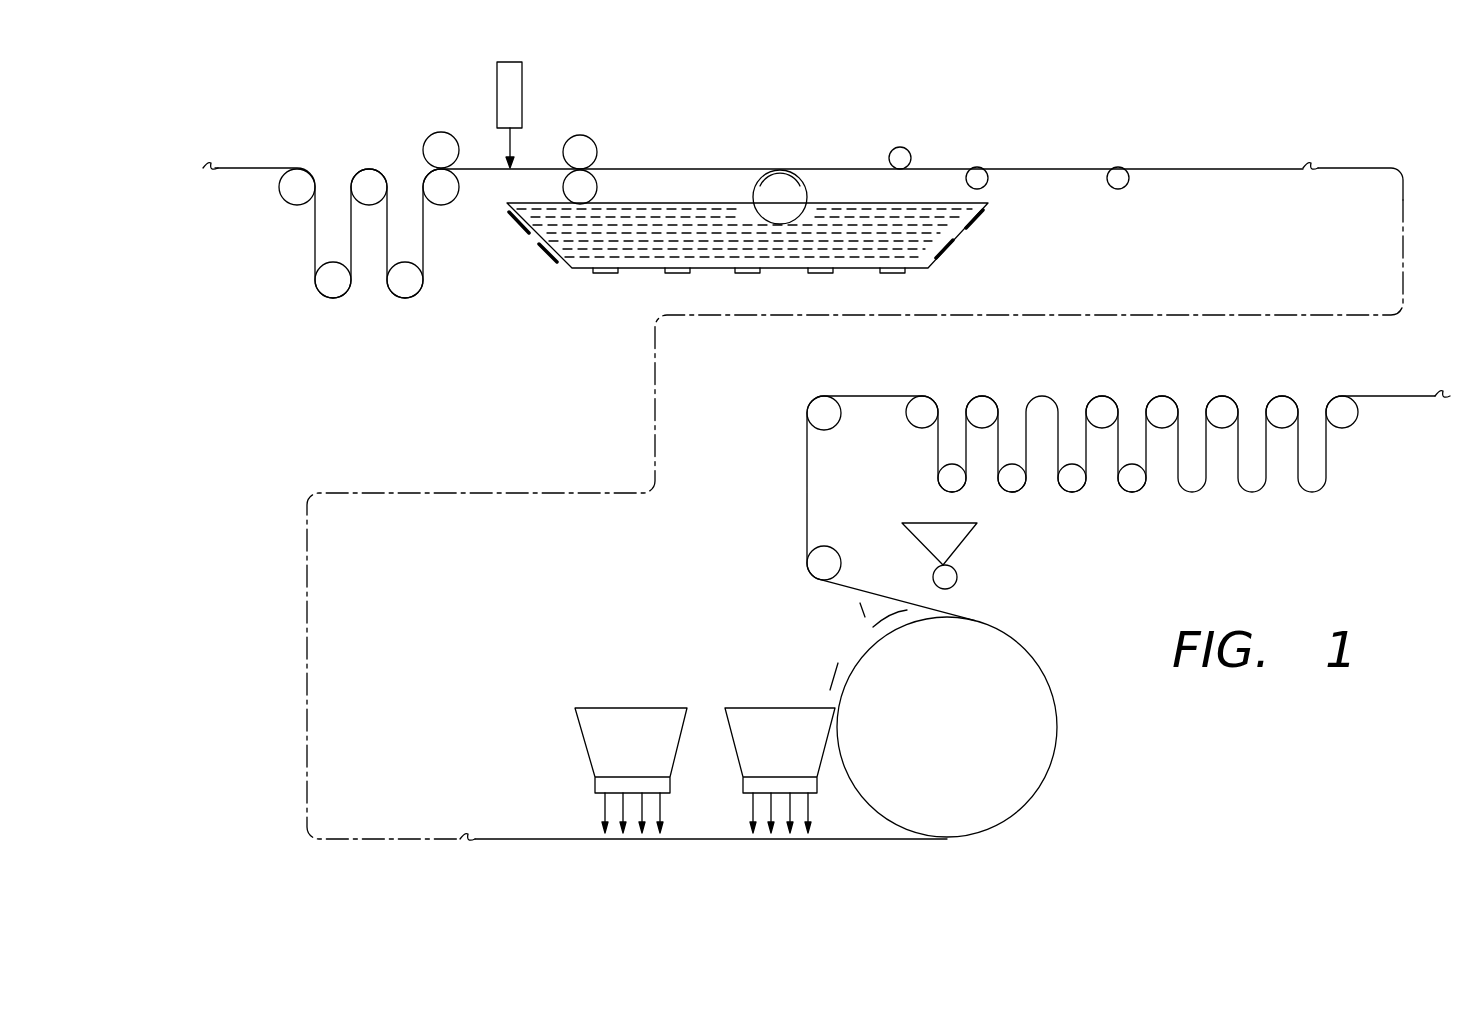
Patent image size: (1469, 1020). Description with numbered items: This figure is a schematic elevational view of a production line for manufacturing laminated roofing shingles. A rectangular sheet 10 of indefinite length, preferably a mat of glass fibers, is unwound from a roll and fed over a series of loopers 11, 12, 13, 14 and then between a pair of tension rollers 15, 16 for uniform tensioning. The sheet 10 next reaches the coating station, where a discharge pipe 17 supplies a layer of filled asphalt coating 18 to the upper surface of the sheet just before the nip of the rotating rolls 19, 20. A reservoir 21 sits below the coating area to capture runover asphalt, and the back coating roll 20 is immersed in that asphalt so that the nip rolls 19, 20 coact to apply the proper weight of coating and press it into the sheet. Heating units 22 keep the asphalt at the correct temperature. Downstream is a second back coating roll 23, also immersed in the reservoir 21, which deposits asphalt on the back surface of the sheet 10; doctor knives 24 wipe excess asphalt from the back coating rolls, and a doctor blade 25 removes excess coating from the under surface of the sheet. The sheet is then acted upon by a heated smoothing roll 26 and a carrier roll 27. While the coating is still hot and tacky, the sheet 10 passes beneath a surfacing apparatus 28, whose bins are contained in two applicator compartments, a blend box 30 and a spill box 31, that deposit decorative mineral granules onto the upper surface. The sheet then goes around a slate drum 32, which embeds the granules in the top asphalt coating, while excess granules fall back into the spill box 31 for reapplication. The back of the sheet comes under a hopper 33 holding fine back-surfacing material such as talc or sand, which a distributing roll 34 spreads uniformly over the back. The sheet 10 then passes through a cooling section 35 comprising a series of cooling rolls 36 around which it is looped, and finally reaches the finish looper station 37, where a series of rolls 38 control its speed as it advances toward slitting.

The sheet 10 is at (243, 167).
The looper 11 is at (281, 193).
The looper 12 is at (316, 276).
The looper 13 is at (356, 178).
The looper 14 is at (393, 290).
The tension roller 15 is at (428, 139).
The tension roller 16 is at (459, 188).
The discharge pipe 17 is at (497, 95).
The asphalt coating 18 is at (512, 137).
The nip roll 19 is at (592, 141).
The back coating roll 20 is at (597, 192).
The reservoir 21 is at (505, 213).
The heating units 22 is at (512, 208).
The back coating roll 23 is at (782, 170).
The doctor knife 24 is at (758, 176).
The doctor blade 25 is at (989, 179).
The smoothing roll 26 is at (911, 156).
The carrier roll 27 is at (1130, 180).
The surfacing apparatus 28 is at (830, 672).
The blend box 30 is at (590, 708).
The spill box 31 is at (770, 708).
The slate drum 32 is at (1022, 760).
The hopper 33 is at (957, 565).
The distributing roll 34 is at (957, 580).
The cooling section 35 is at (935, 377).
The cooling rolls 36 is at (985, 396).
The finish looper station 37 is at (1340, 362).
The rolls 38 is at (1222, 396).